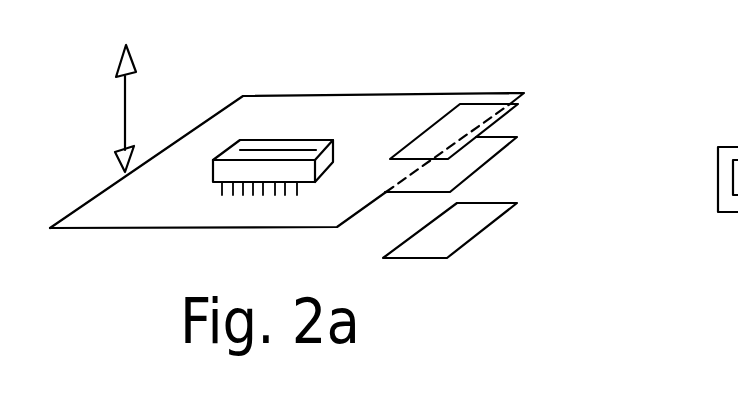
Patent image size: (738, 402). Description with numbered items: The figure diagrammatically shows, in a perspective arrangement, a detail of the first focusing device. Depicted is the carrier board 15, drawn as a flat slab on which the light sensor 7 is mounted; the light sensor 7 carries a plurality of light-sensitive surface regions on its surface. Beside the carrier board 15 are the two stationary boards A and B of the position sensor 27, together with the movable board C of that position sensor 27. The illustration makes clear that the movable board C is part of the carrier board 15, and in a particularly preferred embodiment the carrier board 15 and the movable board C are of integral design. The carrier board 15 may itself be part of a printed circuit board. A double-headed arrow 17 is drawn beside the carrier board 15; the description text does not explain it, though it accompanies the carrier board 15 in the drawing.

The light sensor 7 is at (230, 152).
The carrier board 15 is at (318, 112).
The direction of movement of the board 17 is at (123, 115).
The position sensor 27 is at (588, 133).